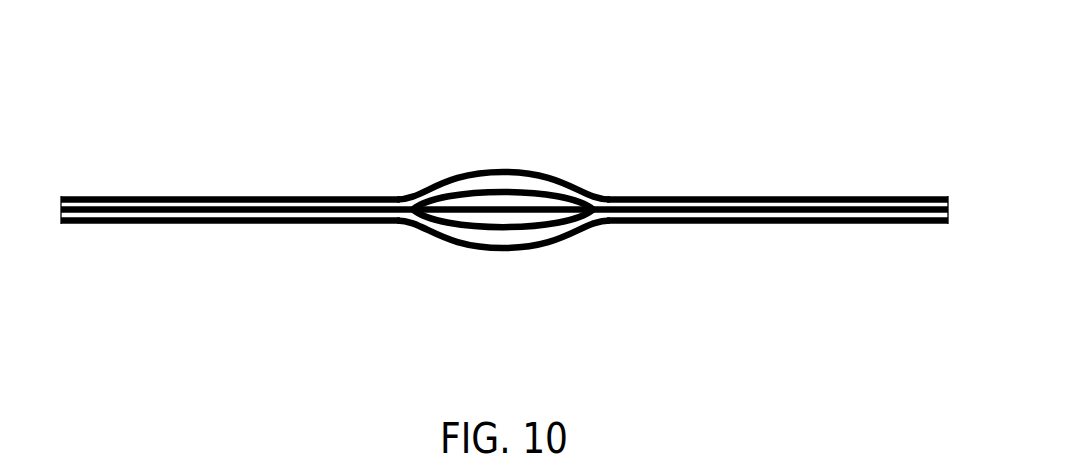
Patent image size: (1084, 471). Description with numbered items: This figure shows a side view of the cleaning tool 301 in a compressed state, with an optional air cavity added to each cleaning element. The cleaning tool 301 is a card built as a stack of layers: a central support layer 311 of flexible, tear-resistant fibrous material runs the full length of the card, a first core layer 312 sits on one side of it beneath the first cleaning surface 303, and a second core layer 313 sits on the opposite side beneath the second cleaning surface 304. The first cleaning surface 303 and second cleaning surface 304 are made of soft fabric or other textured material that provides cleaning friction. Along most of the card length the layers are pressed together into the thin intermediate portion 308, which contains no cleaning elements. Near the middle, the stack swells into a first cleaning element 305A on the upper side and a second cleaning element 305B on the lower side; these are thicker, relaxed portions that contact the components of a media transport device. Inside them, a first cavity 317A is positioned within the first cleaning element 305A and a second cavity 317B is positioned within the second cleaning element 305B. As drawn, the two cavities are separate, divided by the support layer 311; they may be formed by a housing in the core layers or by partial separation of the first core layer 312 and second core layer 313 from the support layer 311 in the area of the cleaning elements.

The cleaning tool 301 is at (225, 46).
The first cleaning surface 303 is at (727, 195).
The second cleaning surface 304 is at (802, 223).
The first cleaning element 305A is at (490, 168).
The second cleaning element 305B is at (532, 252).
The intermediate portion 308 is at (235, 189).
The support layer 311 is at (70, 225).
The first core layer 312 is at (343, 197).
The second core layer 313 is at (278, 225).
The first cavity 317A is at (532, 190).
The second cavity 317B is at (460, 230).